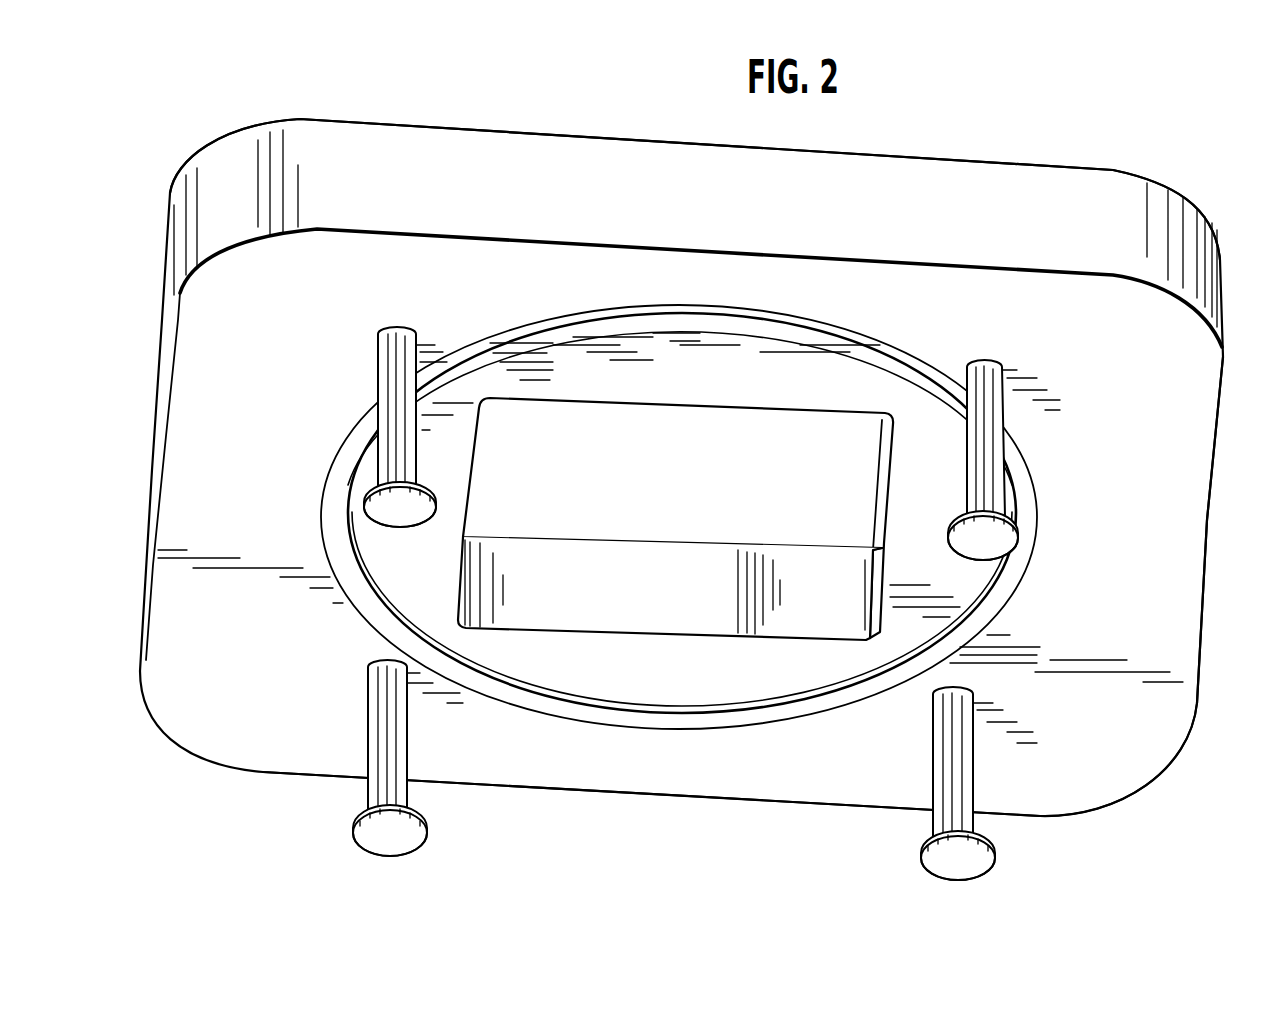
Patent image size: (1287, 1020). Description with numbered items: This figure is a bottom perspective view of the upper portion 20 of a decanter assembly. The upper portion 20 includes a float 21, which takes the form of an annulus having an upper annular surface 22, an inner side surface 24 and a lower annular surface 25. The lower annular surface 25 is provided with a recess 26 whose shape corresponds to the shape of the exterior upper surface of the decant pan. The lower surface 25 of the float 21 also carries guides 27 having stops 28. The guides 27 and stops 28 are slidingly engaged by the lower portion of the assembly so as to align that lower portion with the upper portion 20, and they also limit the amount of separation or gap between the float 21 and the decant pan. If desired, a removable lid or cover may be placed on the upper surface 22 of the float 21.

The upper portion 20 is at (1210, 641).
The float 21 is at (1206, 578).
The upper annular surface 22 is at (302, 120).
The inner side surface 24 is at (677, 562).
The lower annular surface 25 is at (1143, 742).
The recess 26 is at (657, 723).
The guides 27 is at (415, 447).
The stops 28 is at (423, 508).